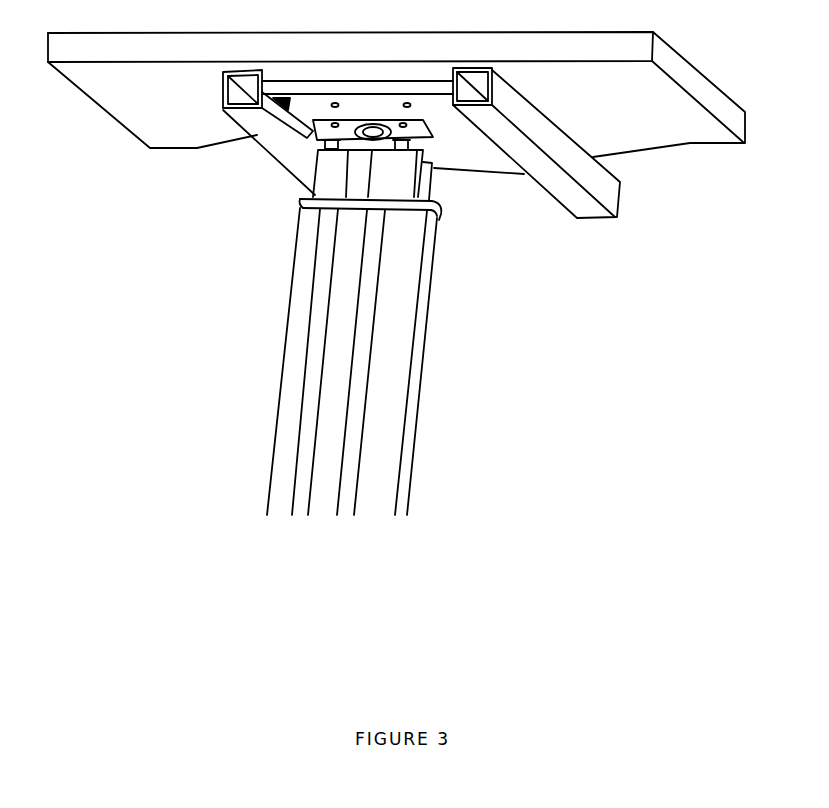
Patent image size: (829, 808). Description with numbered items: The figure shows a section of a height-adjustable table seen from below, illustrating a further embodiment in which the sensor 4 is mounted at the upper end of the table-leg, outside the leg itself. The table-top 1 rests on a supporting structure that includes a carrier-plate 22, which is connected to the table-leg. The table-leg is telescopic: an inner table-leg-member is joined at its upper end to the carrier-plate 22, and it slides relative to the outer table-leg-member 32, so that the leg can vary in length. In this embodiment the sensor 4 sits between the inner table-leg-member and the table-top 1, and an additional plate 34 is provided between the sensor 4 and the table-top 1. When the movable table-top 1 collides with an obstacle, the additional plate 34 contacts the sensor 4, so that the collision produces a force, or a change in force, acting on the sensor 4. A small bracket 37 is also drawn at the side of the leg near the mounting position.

The table-top 1 is at (623, 113).
The carrier-plate 22 is at (240, 110).
The sensor 4 is at (323, 147).
The additional plate 34 is at (427, 136).
The bracket 37 is at (427, 190).
The outer table-leg-member 32 is at (422, 294).